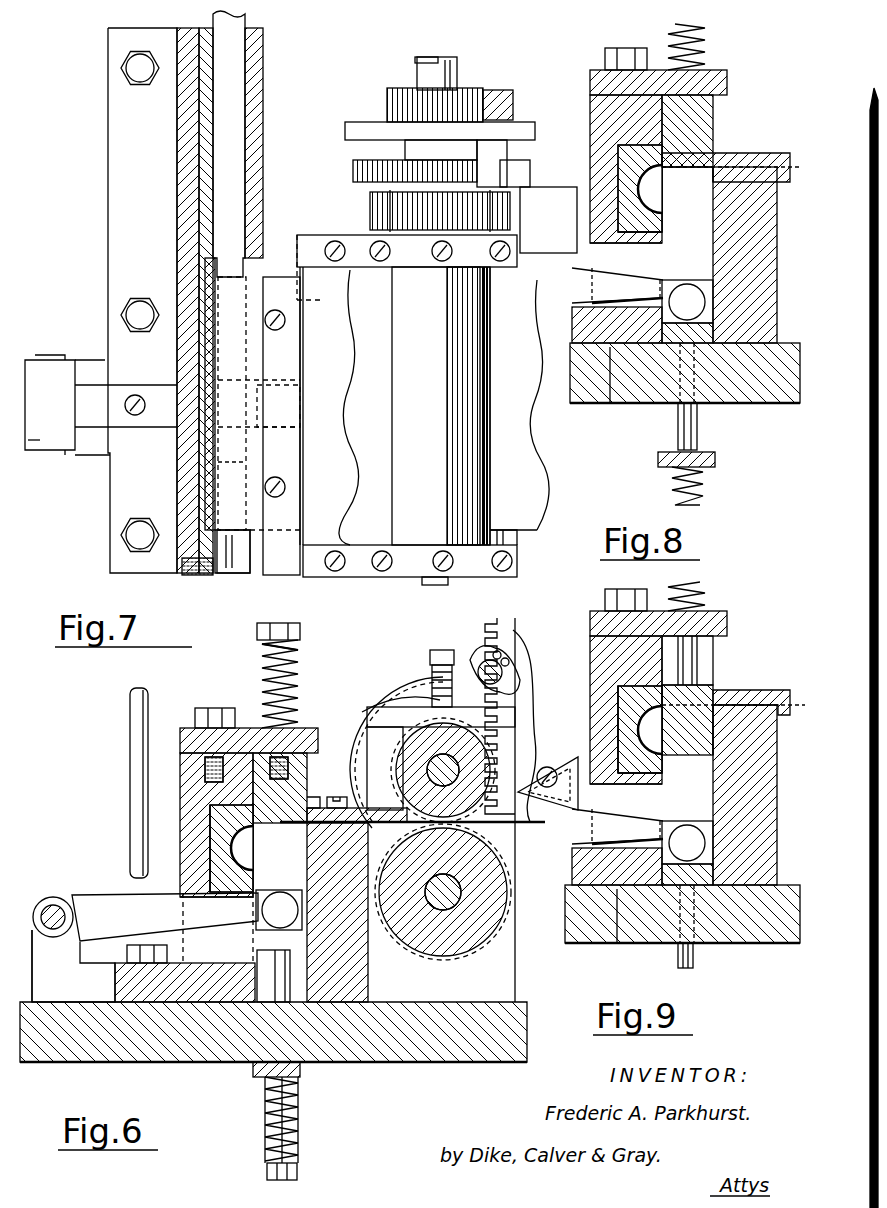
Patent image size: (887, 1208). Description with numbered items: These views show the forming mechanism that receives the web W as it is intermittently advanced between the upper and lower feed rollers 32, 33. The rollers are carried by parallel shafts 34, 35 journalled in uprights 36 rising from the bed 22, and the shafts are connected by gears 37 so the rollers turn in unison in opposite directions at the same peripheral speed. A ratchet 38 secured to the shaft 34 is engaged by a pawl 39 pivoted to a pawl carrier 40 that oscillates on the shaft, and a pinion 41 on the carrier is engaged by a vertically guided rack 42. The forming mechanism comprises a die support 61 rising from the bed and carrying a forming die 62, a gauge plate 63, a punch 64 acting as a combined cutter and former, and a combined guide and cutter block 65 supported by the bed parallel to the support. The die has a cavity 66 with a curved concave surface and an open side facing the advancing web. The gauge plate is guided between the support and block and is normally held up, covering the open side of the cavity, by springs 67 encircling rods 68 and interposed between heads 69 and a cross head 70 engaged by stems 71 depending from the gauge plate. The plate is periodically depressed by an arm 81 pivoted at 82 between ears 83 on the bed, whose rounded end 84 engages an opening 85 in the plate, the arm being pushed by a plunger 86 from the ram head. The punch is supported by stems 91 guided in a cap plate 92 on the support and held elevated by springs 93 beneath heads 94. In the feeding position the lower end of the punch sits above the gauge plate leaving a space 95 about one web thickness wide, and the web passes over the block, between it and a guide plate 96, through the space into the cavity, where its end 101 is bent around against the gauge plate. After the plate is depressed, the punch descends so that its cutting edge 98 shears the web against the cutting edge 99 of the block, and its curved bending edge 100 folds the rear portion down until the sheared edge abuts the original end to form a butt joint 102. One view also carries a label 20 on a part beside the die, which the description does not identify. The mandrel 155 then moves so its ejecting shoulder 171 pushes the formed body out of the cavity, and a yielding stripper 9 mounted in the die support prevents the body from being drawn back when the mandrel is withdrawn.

In FIG. 7, the stripper 9 is at (205, 576).
In FIG. 9, the clamp bar 20 is at (620, 712).
In FIG. 8, the bed 22 is at (740, 380).
In FIG. 9, the bed 22 is at (772, 920).
In FIG. 6, the bed 22 is at (395, 1040).
In FIG. 7, the upper feed roller 32 is at (445, 320).
In FIG. 6, the upper feed roller 32 is at (420, 760).
In FIG. 7, the lower feed roller 33 is at (510, 538).
In FIG. 6, the lower feed roller 33 is at (465, 945).
In FIG. 7, the shaft 34 is at (425, 57).
In FIG. 6, the shaft 34 is at (430, 778).
In FIG. 6, the shaft 35 is at (500, 915).
In FIG. 7, the uprights 36 is at (512, 257).
In FIG. 6, the uprights 36 is at (517, 990).
In FIG. 7, the gears 37 is at (400, 210).
In FIG. 6, the gears 37 is at (518, 832).
In FIG. 7, the ratchet 38 is at (375, 170).
In FIG. 6, the ratchet 38 is at (420, 700).
In FIG. 7, the pawl 39 is at (505, 180).
In FIG. 6, the pawl 39 is at (482, 660).
In FIG. 7, the pawl carrier 40 is at (365, 128).
In FIG. 6, the pawl carrier 40 is at (398, 700).
In FIG. 7, the pinion 41 is at (410, 110).
In FIG. 7, the rack 42 is at (498, 90).
In FIG. 6, the rack 42 is at (505, 630).
In FIG. 7, the die support 61 is at (130, 165).
In FIG. 8, the die support 61 is at (610, 403).
In FIG. 9, the die support 61 is at (618, 943).
In FIG. 6, the die support 61 is at (195, 1002).
In FIG. 7, the forming die 62 is at (212, 472).
In FIG. 8, the forming die 62 is at (620, 150).
In FIG. 9, the forming die 62 is at (635, 688).
In FIG. 6, the forming die 62 is at (215, 812).
In FIG. 8, the gauge plate 63 is at (700, 238).
In FIG. 9, the gauge plate 63 is at (695, 792).
In FIG. 6, the gauge plate 63 is at (293, 868).
In FIG. 7, the punch 64 is at (283, 305).
In FIG. 8, the punch 64 is at (690, 128).
In FIG. 9, the punch 64 is at (698, 690).
In FIG. 6, the punch 64 is at (305, 760).
In FIG. 8, the guide and cutter block 65 is at (750, 262).
In FIG. 9, the guide and cutter block 65 is at (750, 838).
In FIG. 6, the guide and cutter block 65 is at (350, 955).
In FIG. 7, the die cavity 66 is at (232, 575).
In FIG. 8, the die cavity 66 is at (618, 240).
In FIG. 9, the die cavity 66 is at (620, 760).
In FIG. 6, the die cavity 66 is at (230, 860).
In FIG. 6, the springs 67 is at (300, 1125).
In FIG. 6, the rods 68 is at (300, 1092).
In FIG. 6, the heads 69 is at (297, 1170).
In FIG. 6, the cross head 70 is at (255, 1070).
In FIG. 8, the stems 71 is at (688, 430).
In FIG. 9, the stems 71 is at (693, 955).
In FIG. 6, the stems 71 is at (290, 985).
In FIG. 7, the arm 81 is at (92, 385).
In FIG. 8, the arm 81 is at (575, 290).
In FIG. 9, the arm 81 is at (617, 826).
In FIG. 6, the arm 81 is at (105, 905).
In FIG. 7, the pivot 82 is at (45, 355).
In FIG. 6, the pivot 82 is at (48, 903).
In FIG. 7, the ears 83 is at (34, 445).
In FIG. 6, the ears 83 is at (60, 975).
In FIG. 7, the rounded end 84 is at (300, 400).
In FIG. 8, the rounded end 84 is at (690, 302).
In FIG. 9, the rounded end 84 is at (715, 853).
In FIG. 6, the rounded end 84 is at (298, 910).
In FIG. 7, the opening 85 is at (270, 370).
In FIG. 6, the opening 85 is at (255, 948).
In FIG. 7, the plunger 86 is at (138, 394).
In FIG. 6, the plunger 86 is at (140, 772).
In FIG. 7, the stems 91 is at (274, 332).
In FIG. 6, the stems 91 is at (290, 670).
In FIG. 8, the cap plate 92 is at (658, 59).
In FIG. 9, the cap plate 92 is at (658, 633).
In FIG. 6, the cap plate 92 is at (247, 728).
In FIG. 6, the springs 93 is at (292, 650).
In FIG. 6, the heads 94 is at (282, 635).
In FIG. 6, the space 95 is at (310, 792).
In FIG. 7, the guide plate 96 is at (318, 245).
In FIG. 6, the guide plate 96 is at (360, 770).
In FIG. 8, the cutting edge 98 is at (708, 145).
In FIG. 9, the cutting edge 98 is at (714, 740).
In FIG. 8, the cutting edge 99 is at (712, 175).
In FIG. 9, the cutting edge 99 is at (735, 698).
In FIG. 8, the curved bending edge 100 is at (635, 148).
In FIG. 9, the curved bending edge 100 is at (650, 775).
In FIG. 6, the curved bending edge 100 is at (231, 848).
In FIG. 8, the end 101 is at (645, 232).
In FIG. 6, the end 101 is at (215, 848).
In FIG. 9, the butt joint 102 is at (635, 775).
In FIG. 7, the mandrel 155 is at (228, 50).
In FIG. 8, the mandrel 155 is at (655, 185).
In FIG. 9, the mandrel 155 is at (615, 700).
In FIG. 6, the mandrel 155 is at (230, 895).
In FIG. 7, the ejecting shoulder 171 is at (215, 262).
In FIG. 7, the web W is at (515, 468).
In FIG. 8, the web W is at (795, 165).
In FIG. 9, the web W is at (795, 700).
In FIG. 6, the web W is at (515, 830).